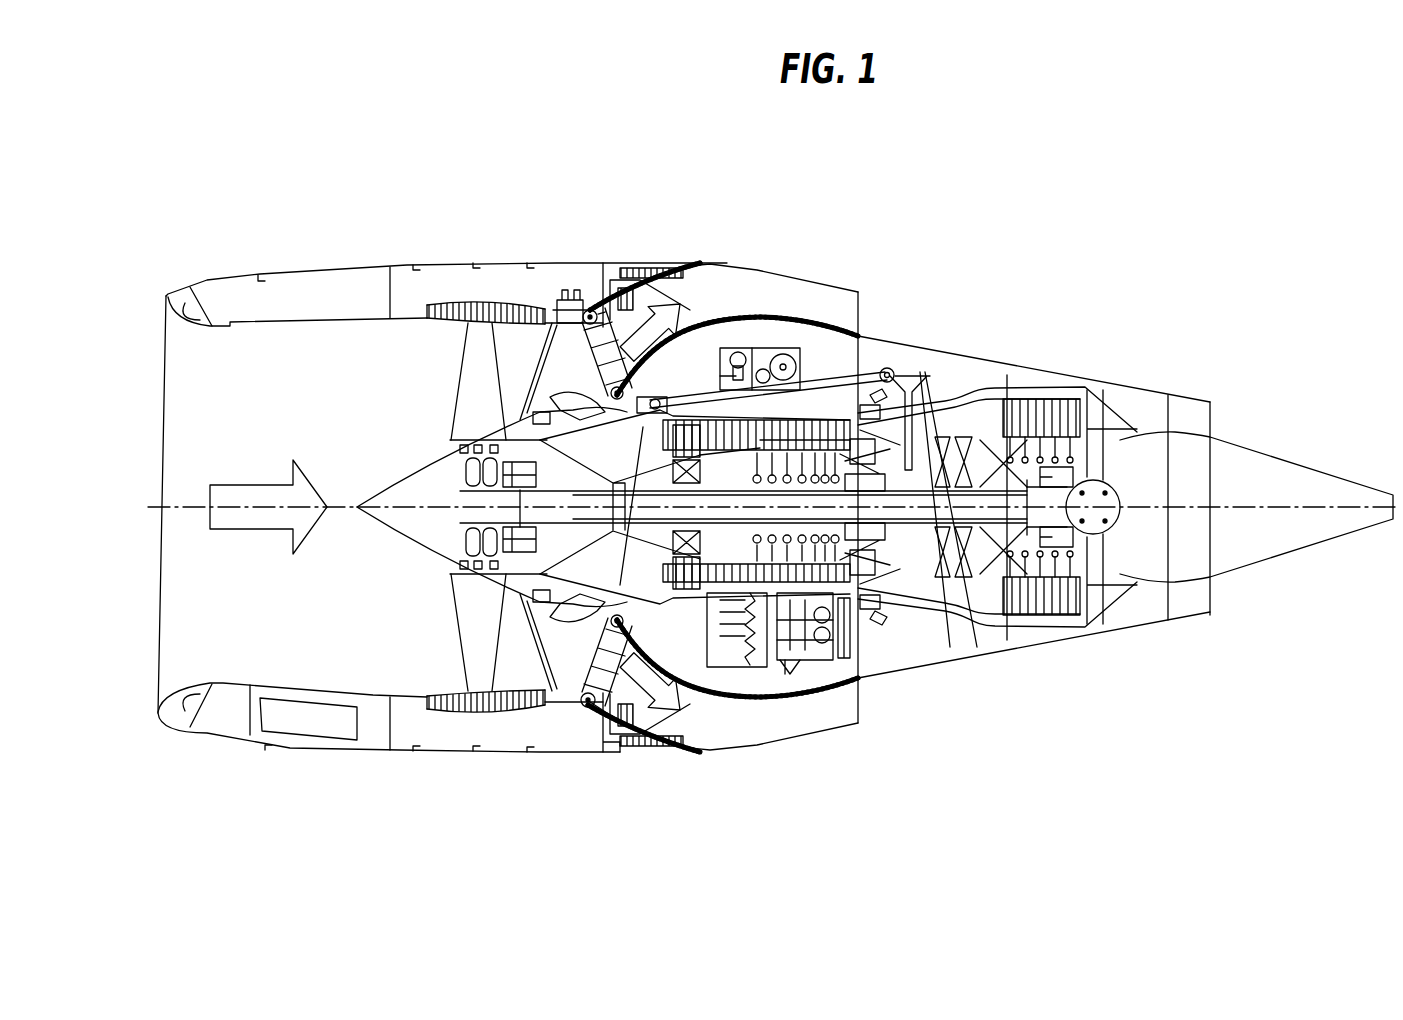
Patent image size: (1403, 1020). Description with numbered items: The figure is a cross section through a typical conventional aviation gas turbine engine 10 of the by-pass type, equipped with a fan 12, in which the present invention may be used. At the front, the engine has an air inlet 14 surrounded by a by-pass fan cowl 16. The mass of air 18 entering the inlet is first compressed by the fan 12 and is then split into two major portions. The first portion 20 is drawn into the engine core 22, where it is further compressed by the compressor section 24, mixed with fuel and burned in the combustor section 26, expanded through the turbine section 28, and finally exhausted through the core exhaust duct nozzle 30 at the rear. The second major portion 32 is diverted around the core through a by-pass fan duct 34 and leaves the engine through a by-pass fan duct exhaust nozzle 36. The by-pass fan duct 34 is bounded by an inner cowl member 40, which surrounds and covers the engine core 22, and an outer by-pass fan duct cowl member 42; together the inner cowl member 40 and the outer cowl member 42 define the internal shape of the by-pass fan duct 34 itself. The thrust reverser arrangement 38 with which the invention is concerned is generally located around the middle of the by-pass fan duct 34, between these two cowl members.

The gas turbine engine 10 is at (790, 237).
The fan 12 is at (466, 388).
The air inlet 14 is at (195, 605).
The by-pass fan cowl 16 is at (208, 279).
The mass of air 18 is at (265, 512).
The first portion 20 is at (583, 415).
The engine core 22 is at (833, 411).
The compressor section 24 is at (790, 553).
The combustor section 26 is at (843, 548).
The turbine section 28 is at (1053, 420).
The core exhaust duct nozzle 30 is at (1212, 417).
The second major portion 32 is at (670, 312).
The by-pass fan duct 34 is at (810, 300).
The by-pass fan duct exhaust nozzle 36 is at (857, 703).
The thrust reverser arrangement 38 is at (647, 266).
The inner cowl member 40 is at (790, 703).
The outer by-pass fan duct cowl member 42 is at (757, 270).